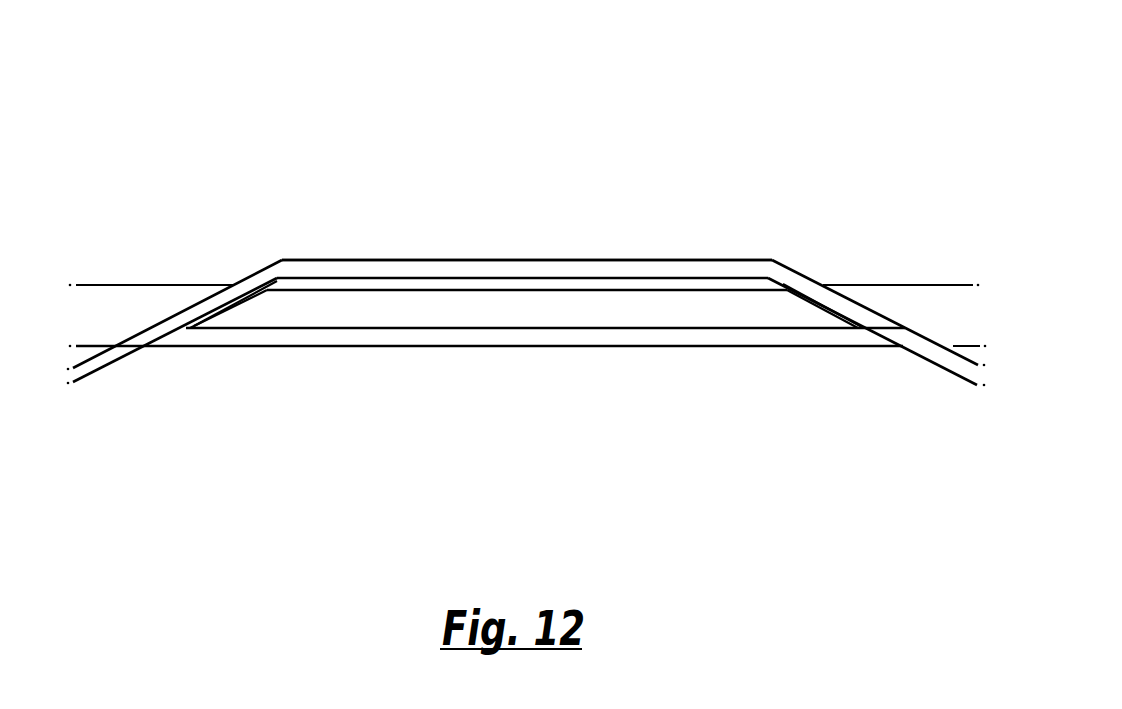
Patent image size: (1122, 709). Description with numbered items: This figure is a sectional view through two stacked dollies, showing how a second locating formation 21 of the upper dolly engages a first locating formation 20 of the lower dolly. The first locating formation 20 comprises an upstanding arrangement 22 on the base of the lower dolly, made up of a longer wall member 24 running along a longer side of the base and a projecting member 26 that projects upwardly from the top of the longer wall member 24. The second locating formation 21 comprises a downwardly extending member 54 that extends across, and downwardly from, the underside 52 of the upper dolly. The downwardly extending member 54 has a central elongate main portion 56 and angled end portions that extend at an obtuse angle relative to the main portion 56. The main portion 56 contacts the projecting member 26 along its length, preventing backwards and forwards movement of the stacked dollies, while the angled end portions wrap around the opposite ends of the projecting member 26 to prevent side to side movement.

The first locating formation 20 is at (555, 365).
The second locating formation 21 is at (606, 248).
The upstanding arrangement 22 is at (353, 348).
The longer wall member 24 is at (133, 307).
The projecting member 26 is at (435, 305).
The underside 52 is at (927, 352).
The downwardly extending member 54 is at (697, 260).
The central elongate main portion 56 is at (357, 261).